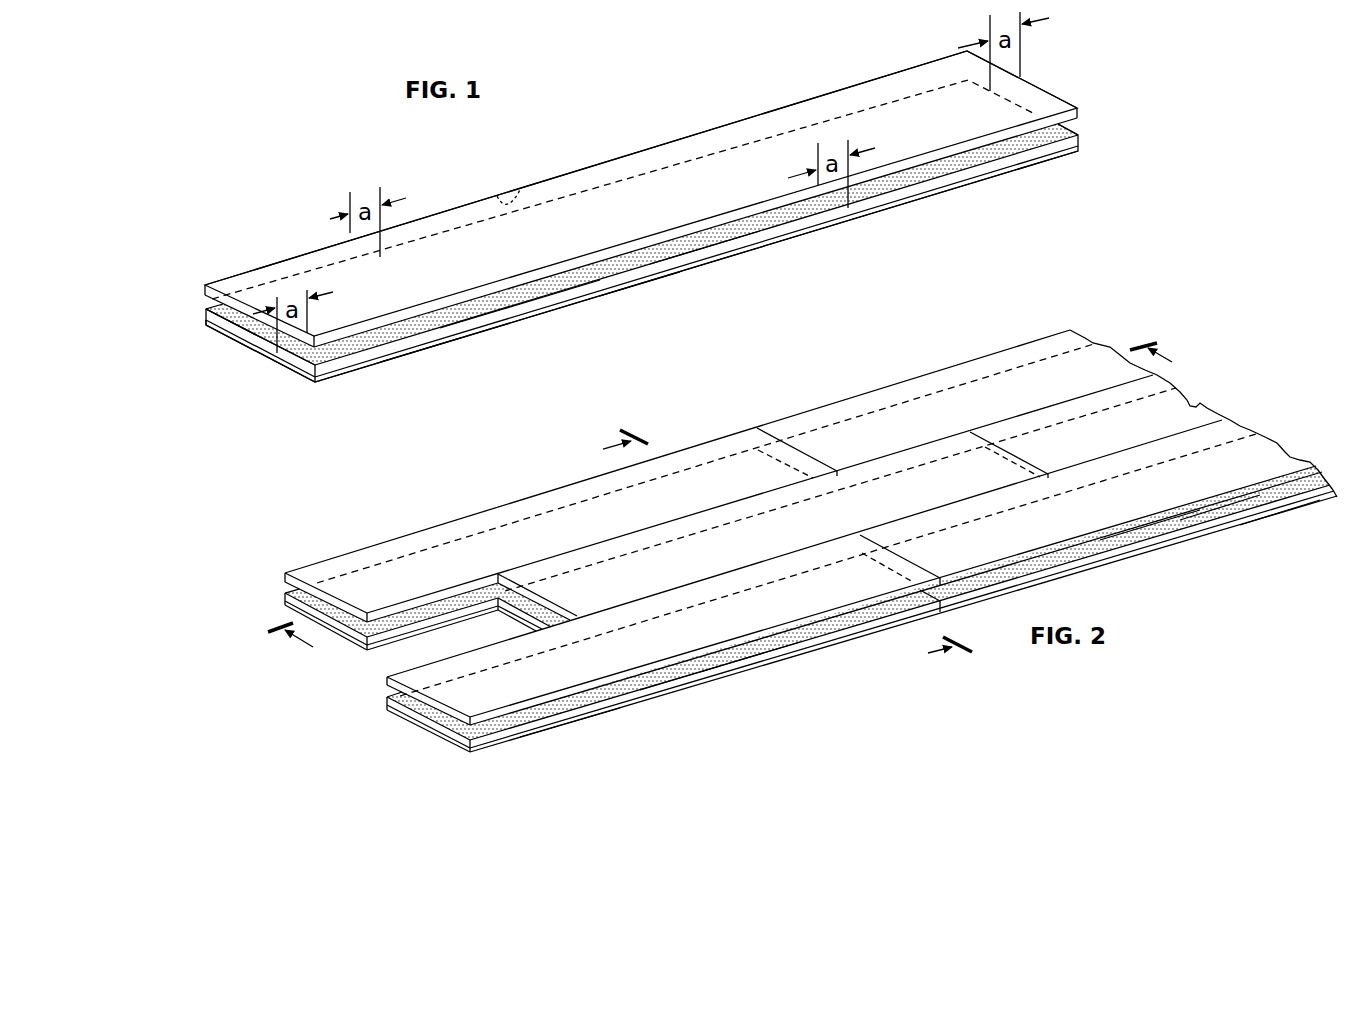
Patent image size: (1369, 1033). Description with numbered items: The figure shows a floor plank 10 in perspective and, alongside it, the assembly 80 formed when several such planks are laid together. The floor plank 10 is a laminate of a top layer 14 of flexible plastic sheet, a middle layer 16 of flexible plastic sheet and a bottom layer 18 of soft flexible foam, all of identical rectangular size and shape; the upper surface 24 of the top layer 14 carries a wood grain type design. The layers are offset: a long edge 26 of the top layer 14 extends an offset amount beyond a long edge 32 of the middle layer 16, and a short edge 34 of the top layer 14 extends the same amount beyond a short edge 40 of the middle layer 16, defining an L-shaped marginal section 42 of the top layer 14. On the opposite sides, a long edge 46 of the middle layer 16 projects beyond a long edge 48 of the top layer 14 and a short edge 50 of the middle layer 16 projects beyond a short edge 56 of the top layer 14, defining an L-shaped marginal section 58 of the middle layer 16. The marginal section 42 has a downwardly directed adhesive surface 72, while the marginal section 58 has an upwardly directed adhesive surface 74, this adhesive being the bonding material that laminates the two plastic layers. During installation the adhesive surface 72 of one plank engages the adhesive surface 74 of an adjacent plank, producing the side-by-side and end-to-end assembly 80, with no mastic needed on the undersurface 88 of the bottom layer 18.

In FIG. 1, the floor plank 10 is at (650, 226).
In FIG. 2, the floor plank 10 is at (806, 541).
In FIG. 1, the top layer 14 is at (669, 193).
In FIG. 2, the top layer 14 is at (447, 700).
In FIG. 1, the middle layer 16 is at (650, 238).
In FIG. 2, the middle layer 16 is at (443, 730).
In FIG. 1, the bottom layer 18 is at (679, 280).
In FIG. 2, the bottom layer 18 is at (452, 745).
In FIG. 1, the upper surface 24 is at (641, 193).
In FIG. 1, the long edge 26 is at (277, 258).
In FIG. 1, the long edge 32 is at (212, 307).
In FIG. 1, the short edge 34 is at (1064, 97).
In FIG. 1, the short edge 40 is at (1073, 128).
In FIG. 1, the L-shaped marginal section 42 is at (778, 122).
In FIG. 1, the long edge 46 is at (632, 277).
In FIG. 1, the long edge 48 is at (708, 223).
In FIG. 1, the short edge 50 is at (237, 330).
In FIG. 1, the short edge 56 is at (292, 332).
In FIG. 1, the L-shaped marginal section 58 is at (459, 312).
In FIG. 2, the L-shaped marginal section 58 is at (689, 666).
In FIG. 1, the adhesive surface 72 is at (498, 197).
In FIG. 1, the adhesive surface 74 is at (540, 290).
In FIG. 2, the adhesive surface 74 is at (747, 647).
In FIG. 2, the assembly 80 is at (802, 506).
In FIG. 1, the undersurface 88 is at (420, 355).
In FIG. 2, the undersurface 88 is at (560, 725).